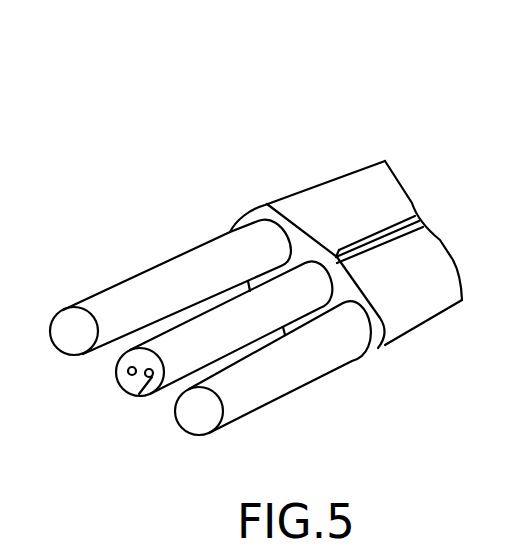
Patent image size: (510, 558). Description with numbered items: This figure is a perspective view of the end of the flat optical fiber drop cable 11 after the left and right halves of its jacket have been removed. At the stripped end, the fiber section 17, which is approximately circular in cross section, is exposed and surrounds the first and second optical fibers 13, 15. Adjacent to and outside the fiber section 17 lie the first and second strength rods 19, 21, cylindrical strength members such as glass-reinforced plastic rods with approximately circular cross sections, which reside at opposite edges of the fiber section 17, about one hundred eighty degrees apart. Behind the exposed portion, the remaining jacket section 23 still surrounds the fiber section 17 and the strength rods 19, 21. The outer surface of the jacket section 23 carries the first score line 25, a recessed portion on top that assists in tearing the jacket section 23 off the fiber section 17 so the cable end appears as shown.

The cable 11 is at (332, 128).
The first optical fiber 13 is at (127, 372).
The second optical fiber 15 is at (138, 393).
The fiber section 17 is at (166, 374).
The first strength rod 19 is at (118, 300).
The second strength rod 21 is at (238, 398).
The jacket section 23 is at (377, 330).
The first score line 25 is at (406, 222).